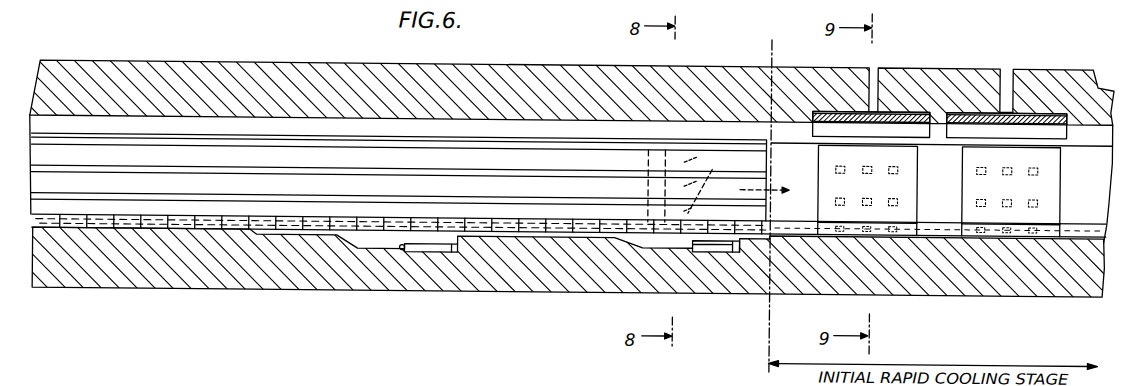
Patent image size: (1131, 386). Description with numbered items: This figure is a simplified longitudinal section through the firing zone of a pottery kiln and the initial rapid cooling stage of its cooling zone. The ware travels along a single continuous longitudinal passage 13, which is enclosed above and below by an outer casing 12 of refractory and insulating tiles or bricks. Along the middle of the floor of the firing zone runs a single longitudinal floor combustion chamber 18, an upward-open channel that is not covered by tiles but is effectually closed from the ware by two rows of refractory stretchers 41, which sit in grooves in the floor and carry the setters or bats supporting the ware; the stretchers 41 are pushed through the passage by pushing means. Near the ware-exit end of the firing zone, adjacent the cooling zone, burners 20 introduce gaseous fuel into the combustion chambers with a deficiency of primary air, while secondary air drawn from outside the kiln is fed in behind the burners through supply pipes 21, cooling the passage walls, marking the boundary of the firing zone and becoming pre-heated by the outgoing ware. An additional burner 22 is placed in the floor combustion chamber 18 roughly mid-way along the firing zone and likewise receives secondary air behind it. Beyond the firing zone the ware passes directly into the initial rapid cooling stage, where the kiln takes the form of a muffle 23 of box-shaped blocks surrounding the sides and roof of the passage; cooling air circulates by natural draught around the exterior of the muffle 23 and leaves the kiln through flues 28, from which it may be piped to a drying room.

The outer casing 12 is at (318, 89).
The longitudinal passage 13 is at (450, 124).
The floor combustion chamber 18 is at (218, 235).
The burners 20 is at (712, 182).
The supply pipes 21 is at (777, 188).
The additional burner 22 is at (403, 253).
The muffle 23 is at (983, 191).
The flues 28 is at (874, 88).
The refractory stretchers 41 is at (144, 233).